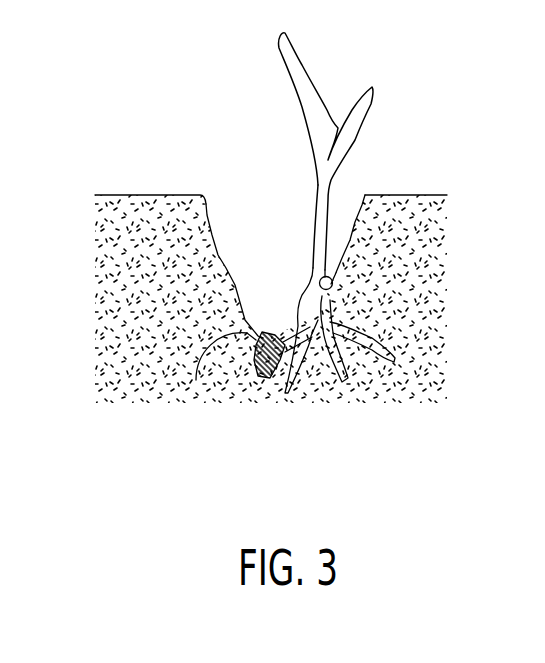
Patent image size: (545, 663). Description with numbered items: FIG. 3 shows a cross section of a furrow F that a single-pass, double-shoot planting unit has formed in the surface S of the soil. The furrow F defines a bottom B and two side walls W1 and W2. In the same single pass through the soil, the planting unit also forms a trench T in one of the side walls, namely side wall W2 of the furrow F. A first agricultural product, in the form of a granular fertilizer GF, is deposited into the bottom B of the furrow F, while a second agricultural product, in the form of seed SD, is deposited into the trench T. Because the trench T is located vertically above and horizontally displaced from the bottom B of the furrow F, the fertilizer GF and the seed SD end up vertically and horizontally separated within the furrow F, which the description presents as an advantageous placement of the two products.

The surface of the soil S is at (148, 194).
The furrow F is at (271, 307).
The granular fertilizer GF is at (262, 334).
The side wall W1 is at (228, 272).
The side wall W2 is at (352, 240).
The seed SD is at (333, 285).
The trench T is at (333, 296).
The bottom B is at (196, 380).